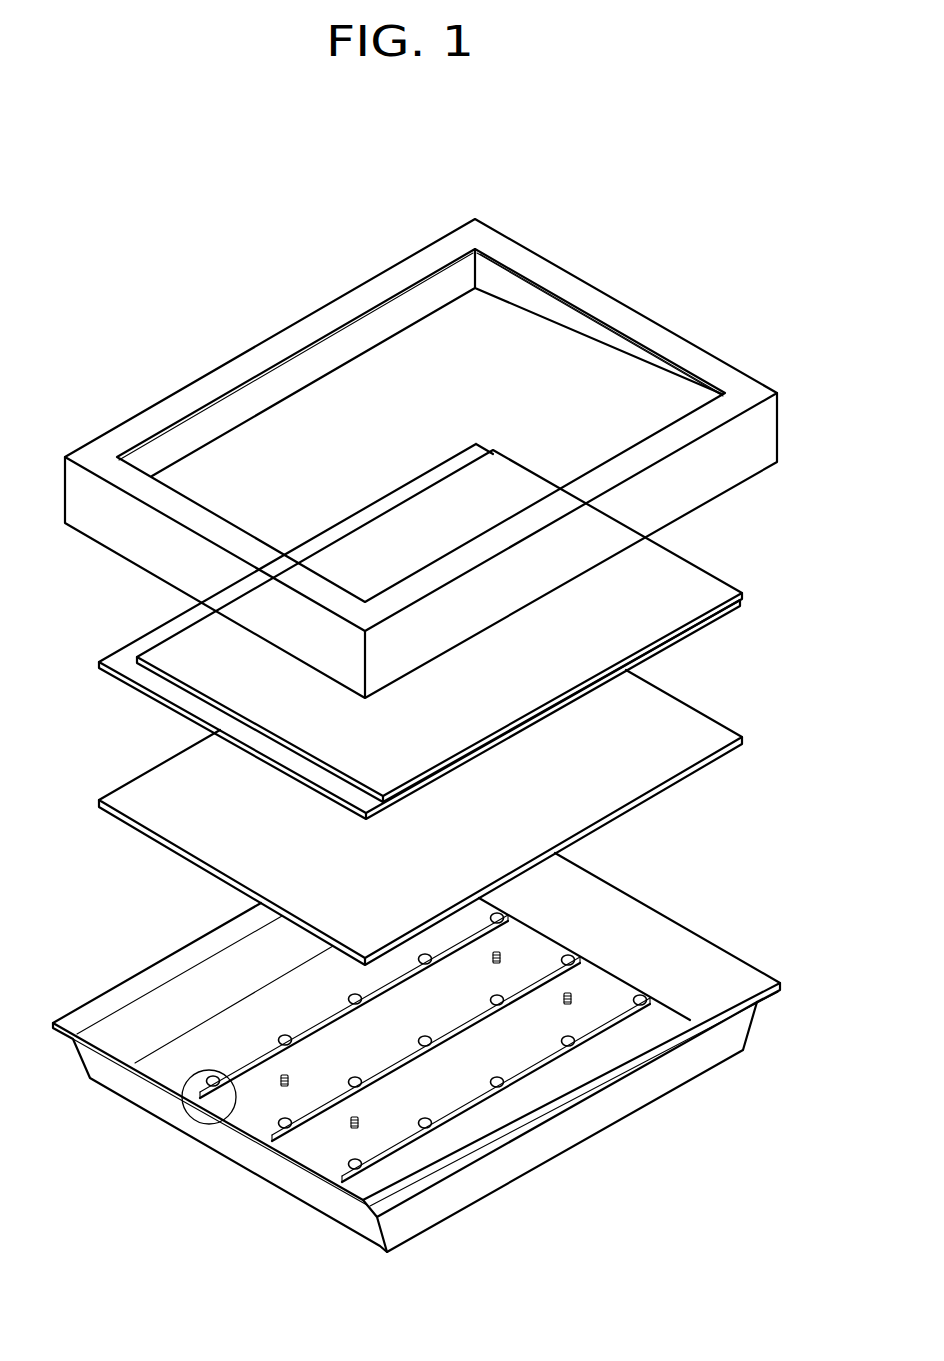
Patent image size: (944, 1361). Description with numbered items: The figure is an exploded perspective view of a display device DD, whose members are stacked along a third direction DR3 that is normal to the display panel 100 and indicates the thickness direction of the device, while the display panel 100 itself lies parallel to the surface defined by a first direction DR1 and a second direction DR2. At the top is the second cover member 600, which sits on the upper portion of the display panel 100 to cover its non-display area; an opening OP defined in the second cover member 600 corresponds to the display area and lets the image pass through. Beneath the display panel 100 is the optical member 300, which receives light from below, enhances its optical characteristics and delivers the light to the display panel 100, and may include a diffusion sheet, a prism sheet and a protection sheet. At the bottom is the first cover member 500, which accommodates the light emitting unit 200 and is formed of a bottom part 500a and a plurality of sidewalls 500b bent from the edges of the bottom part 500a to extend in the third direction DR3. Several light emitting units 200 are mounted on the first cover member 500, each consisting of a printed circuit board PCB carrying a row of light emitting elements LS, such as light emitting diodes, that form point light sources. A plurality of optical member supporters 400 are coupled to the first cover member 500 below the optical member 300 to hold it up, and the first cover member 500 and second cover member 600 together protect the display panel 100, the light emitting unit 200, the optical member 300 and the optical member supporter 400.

The display device DD is at (762, 228).
The second cover member 600 is at (763, 435).
The opening OP is at (598, 379).
The display panel 100 is at (745, 594).
The optical member 300 is at (745, 738).
The first cover member 500 is at (416, 1050).
The bottom part 500a is at (230, 1045).
The sidewalls 500b is at (150, 1030).
The light emitting unit 200 is at (355, 1059).
The printed circuit board PCB is at (233, 1074).
The light emitting elements LS is at (184, 1103).
The optical member supporter 400 is at (342, 1121).
The first direction DR1 is at (689, 1250).
The second direction DR2 is at (689, 1250).
The third direction DR3 is at (689, 1250).